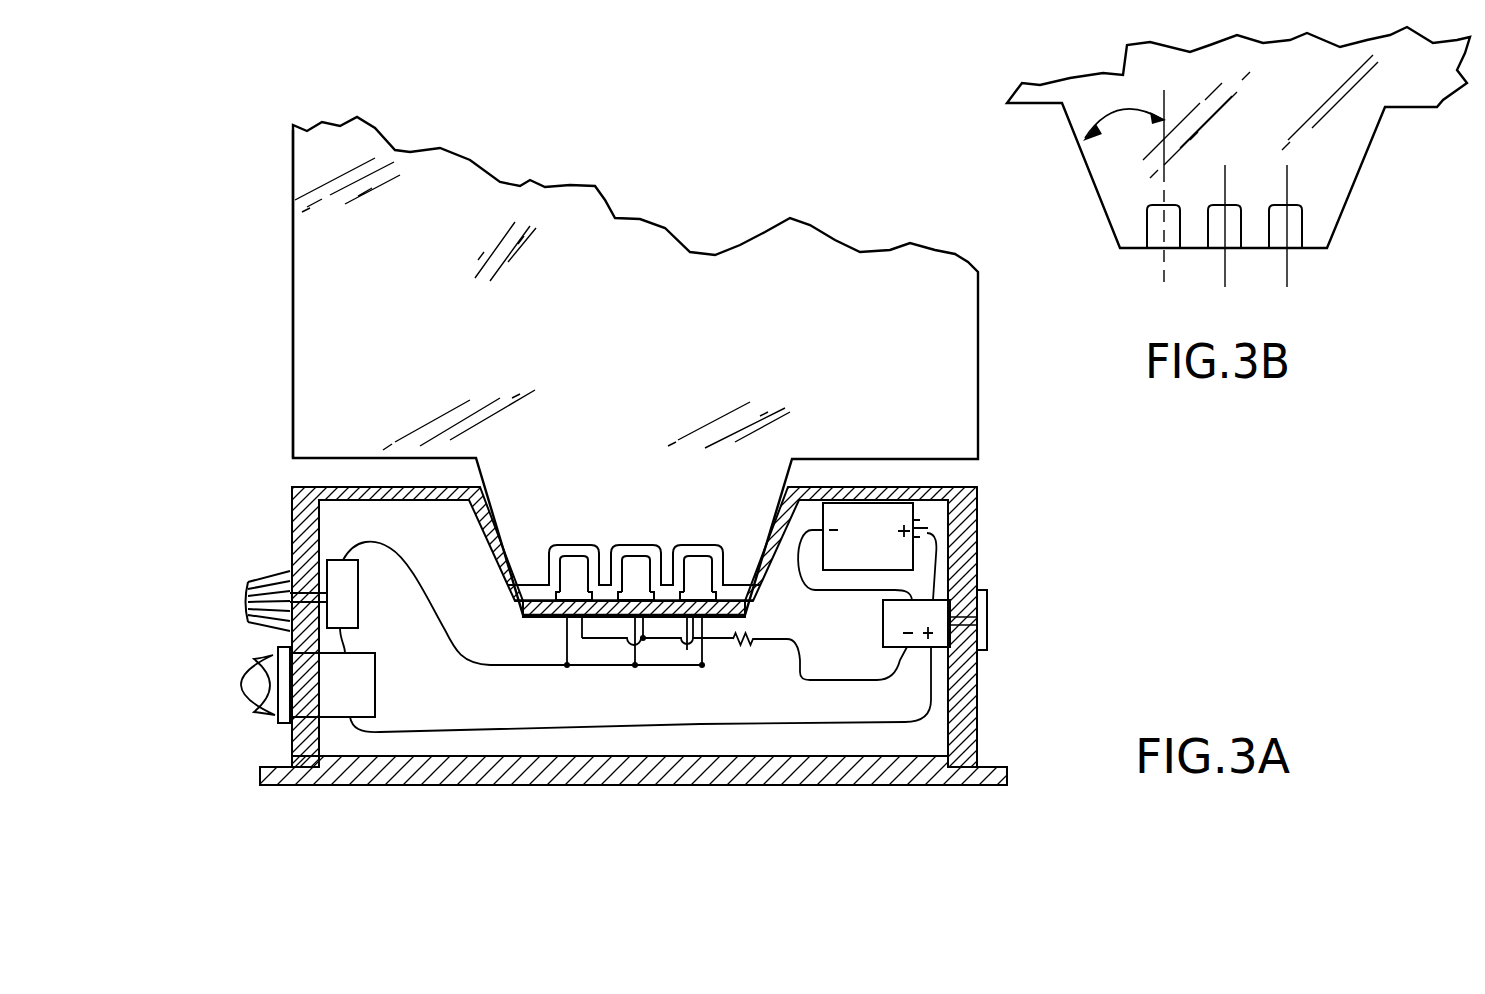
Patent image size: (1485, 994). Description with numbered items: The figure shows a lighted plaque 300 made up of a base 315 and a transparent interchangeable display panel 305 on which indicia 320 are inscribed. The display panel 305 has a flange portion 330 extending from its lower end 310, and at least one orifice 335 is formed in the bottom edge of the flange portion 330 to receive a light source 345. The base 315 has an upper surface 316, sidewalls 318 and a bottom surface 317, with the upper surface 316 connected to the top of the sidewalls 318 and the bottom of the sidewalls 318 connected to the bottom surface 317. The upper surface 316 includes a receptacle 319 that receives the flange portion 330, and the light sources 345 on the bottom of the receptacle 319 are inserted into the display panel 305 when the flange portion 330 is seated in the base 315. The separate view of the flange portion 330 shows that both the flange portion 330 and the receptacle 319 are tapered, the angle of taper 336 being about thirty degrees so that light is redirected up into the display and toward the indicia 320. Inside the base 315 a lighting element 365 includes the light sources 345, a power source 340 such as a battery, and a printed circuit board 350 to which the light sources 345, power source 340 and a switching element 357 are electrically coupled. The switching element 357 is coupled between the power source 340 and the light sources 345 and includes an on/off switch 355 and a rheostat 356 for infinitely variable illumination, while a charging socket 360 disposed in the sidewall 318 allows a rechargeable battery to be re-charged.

In FIG. 3A, the lighted plaque 300 is at (236, 262).
In FIG. 3A, the display panel 305 is at (650, 233).
In FIG. 3A, the lower end 310 is at (312, 424).
In FIG. 3A, the base 315 is at (790, 778).
In FIG. 3A, the upper surface 316 is at (692, 613).
In FIG. 3A, the bottom surface 317 is at (948, 787).
In FIG. 3A, the sidewalls 318 is at (977, 732).
In FIG. 3A, the receptacle 319 is at (695, 588).
In FIG. 3A, the indicia 320 is at (862, 354).
In FIG. 3A, the flange portion 330 is at (550, 521).
In FIG. 3B, the flange portion 330 is at (1343, 133).
In FIG. 3A, the orifice 335 is at (686, 545).
In FIG. 3B, the orifice 335 is at (1303, 226).
In FIG. 3B, the angle of taper 336 is at (1098, 120).
In FIG. 3A, the power source 340 is at (908, 520).
In FIG. 3A, the light source 345 is at (712, 616).
In FIG. 3A, the printed circuit board 350 is at (570, 622).
In FIG. 3A, the on/off switch 355 is at (280, 685).
In FIG. 3A, the rheostat 356 is at (248, 594).
In FIG. 3A, the switching element 357 is at (253, 641).
In FIG. 3A, the charging socket 360 is at (988, 620).
In FIG. 3A, the lighting element 365 is at (605, 660).